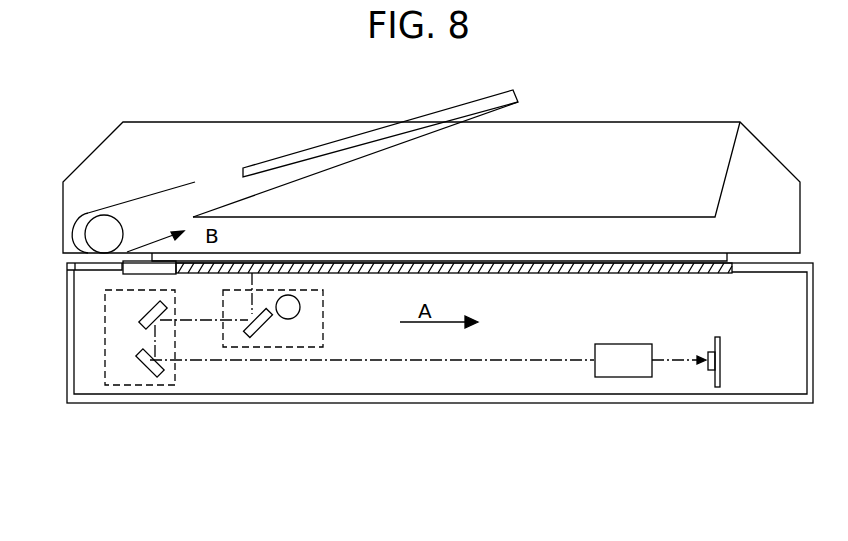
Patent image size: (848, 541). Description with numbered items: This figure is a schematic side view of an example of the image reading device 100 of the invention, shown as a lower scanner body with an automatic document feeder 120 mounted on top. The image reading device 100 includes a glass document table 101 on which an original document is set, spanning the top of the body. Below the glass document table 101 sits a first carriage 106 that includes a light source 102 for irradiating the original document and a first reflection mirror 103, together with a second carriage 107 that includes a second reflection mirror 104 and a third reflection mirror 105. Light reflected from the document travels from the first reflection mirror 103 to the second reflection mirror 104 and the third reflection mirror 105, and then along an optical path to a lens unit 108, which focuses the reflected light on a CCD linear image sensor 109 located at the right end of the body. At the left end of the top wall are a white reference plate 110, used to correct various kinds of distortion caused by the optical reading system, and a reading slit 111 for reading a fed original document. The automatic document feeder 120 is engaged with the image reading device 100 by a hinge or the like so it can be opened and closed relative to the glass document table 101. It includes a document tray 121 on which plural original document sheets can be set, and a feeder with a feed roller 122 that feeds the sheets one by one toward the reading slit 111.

The image reading device 100 is at (369, 418).
The glass document table 101 is at (533, 275).
The light source 102 is at (300, 303).
The first reflection mirror 103 is at (267, 335).
The second reflection mirror 104 is at (140, 313).
The third reflection mirror 105 is at (143, 360).
The first carriage 106 is at (325, 338).
The second carriage 107 is at (177, 373).
The lens unit 108 is at (620, 353).
The CCD linear image sensor 109 is at (711, 350).
The white reference plate 110 is at (166, 270).
The reading slit 111 is at (93, 270).
The automatic document feeder 120 is at (655, 115).
The document tray 121 is at (317, 165).
The feed roller 122 is at (102, 225).